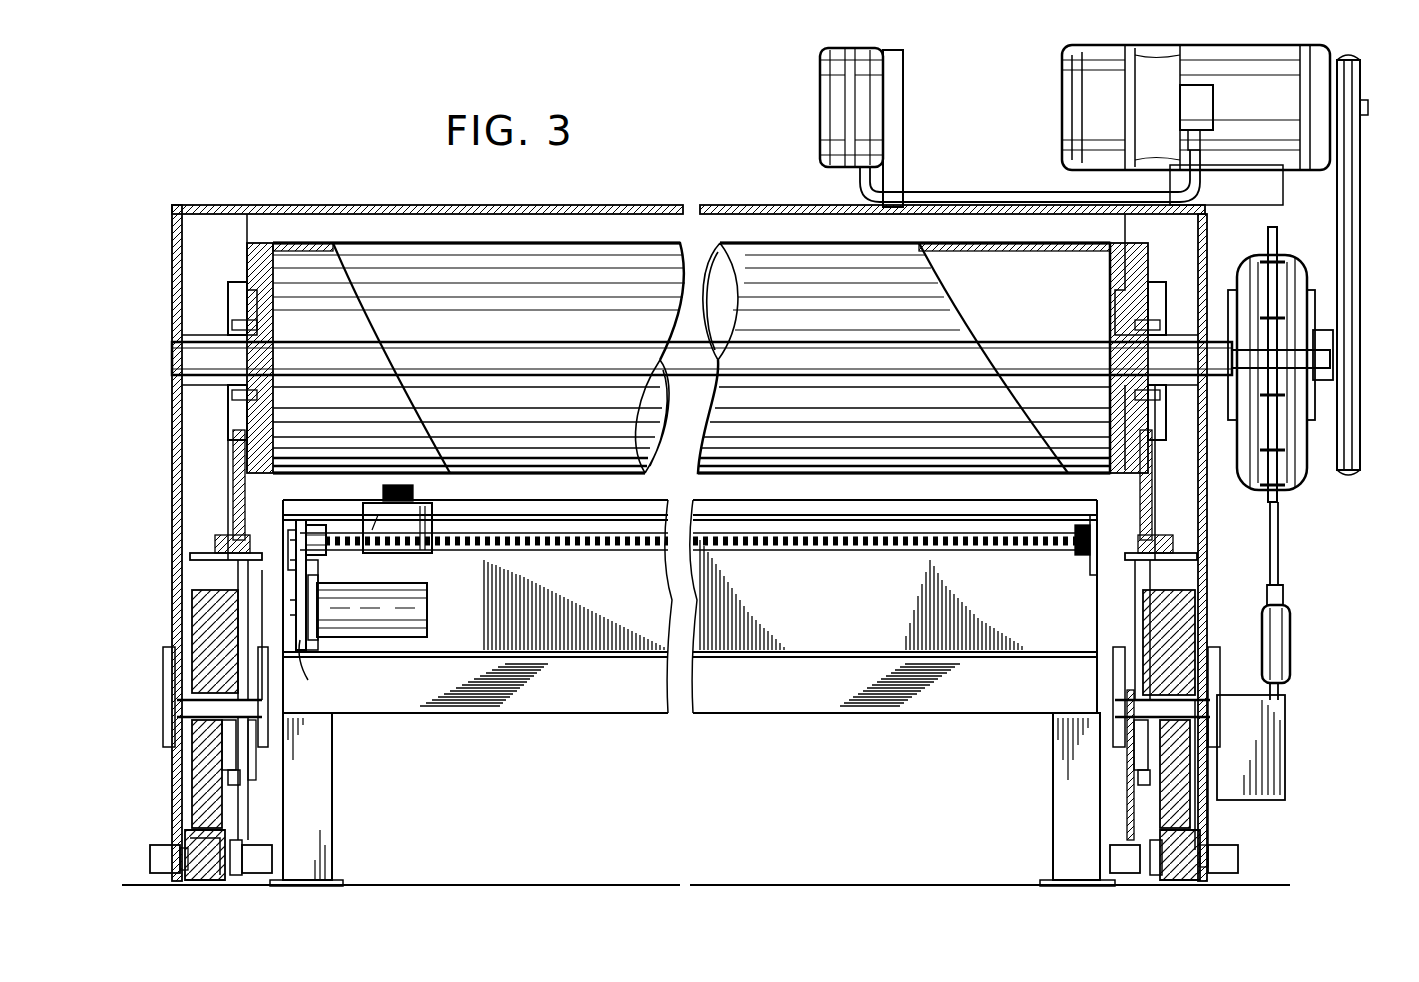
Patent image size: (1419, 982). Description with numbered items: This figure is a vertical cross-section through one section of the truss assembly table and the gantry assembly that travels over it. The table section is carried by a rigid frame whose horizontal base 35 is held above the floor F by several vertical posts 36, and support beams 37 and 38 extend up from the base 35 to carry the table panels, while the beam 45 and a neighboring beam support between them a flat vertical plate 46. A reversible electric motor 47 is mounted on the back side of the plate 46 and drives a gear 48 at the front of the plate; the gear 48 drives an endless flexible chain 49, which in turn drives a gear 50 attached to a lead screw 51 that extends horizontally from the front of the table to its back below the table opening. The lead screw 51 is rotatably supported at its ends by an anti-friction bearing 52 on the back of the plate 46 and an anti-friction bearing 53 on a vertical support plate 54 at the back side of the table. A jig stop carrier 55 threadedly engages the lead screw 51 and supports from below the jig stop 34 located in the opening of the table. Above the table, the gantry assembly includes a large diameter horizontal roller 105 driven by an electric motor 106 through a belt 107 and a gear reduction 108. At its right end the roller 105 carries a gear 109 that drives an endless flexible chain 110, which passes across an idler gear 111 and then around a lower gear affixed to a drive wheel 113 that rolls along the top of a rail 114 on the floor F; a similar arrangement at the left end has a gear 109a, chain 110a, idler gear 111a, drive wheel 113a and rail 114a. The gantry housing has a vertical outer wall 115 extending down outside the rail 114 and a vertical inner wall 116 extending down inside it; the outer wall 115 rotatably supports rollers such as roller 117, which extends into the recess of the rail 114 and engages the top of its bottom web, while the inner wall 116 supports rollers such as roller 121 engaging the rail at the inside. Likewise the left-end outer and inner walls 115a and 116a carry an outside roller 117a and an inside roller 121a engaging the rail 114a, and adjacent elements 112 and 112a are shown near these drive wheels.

The jig stop 34 is at (413, 492).
The horizontal base 35 is at (707, 705).
The vertical posts 36 is at (1053, 785).
The support beam 37 is at (1050, 880).
The support beam 38 is at (330, 798).
The support beam 45 is at (690, 606).
The flat vertical plate 46 is at (320, 575).
The reversible electric motor 47 is at (430, 602).
The gear 48 is at (308, 680).
The endless flexible chain 49 is at (298, 575).
The gear 50 is at (300, 538).
The lead screw 51 is at (600, 552).
The anti-friction bearing 52 is at (318, 528).
The anti-friction bearing 53 is at (1082, 548).
The vertical support plate 54 is at (1095, 575).
The jig stop carrier 55 is at (397, 528).
The horizontal roller 105 is at (650, 245).
The electric motor 106 is at (1196, 125).
The belt 107 is at (1338, 190).
The gear reduction 108 is at (1305, 462).
The gear 109 is at (1145, 290).
The gear 109a is at (235, 290).
The endless flexible chain 110 is at (1150, 472).
The endless flexible chain 110a is at (236, 475).
The idler gear 111 is at (1150, 535).
The idler gear 111a is at (230, 530).
The adjusting bolt 112 is at (1140, 780).
The adjusting bolt 112a is at (242, 782).
The drive wheel 113 is at (1185, 808).
The drive wheel 113a is at (200, 785).
The rail 114 is at (1180, 885).
The rail 114a is at (205, 882).
The vertical outer wall 115 is at (1207, 608).
The outer wall 115a is at (178, 806).
The vertical inner wall 116 is at (1130, 812).
The inner wall 116a is at (255, 765).
The roller 117 is at (1200, 840).
The outside roller 117a is at (185, 875).
The roller 121 is at (1145, 878).
The inside roller 121a is at (240, 845).
The floor F is at (830, 885).